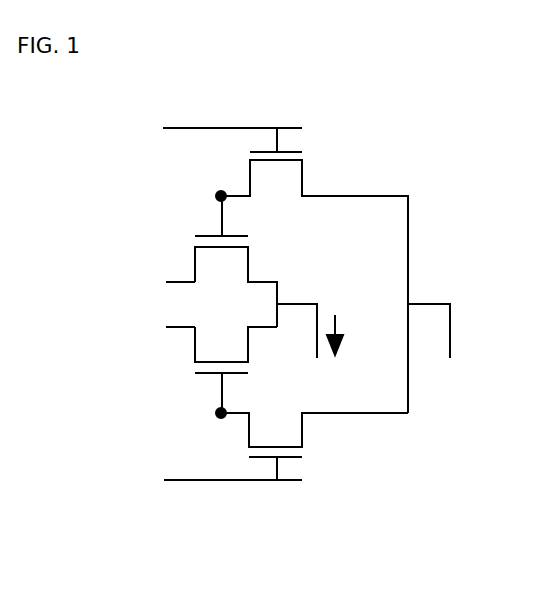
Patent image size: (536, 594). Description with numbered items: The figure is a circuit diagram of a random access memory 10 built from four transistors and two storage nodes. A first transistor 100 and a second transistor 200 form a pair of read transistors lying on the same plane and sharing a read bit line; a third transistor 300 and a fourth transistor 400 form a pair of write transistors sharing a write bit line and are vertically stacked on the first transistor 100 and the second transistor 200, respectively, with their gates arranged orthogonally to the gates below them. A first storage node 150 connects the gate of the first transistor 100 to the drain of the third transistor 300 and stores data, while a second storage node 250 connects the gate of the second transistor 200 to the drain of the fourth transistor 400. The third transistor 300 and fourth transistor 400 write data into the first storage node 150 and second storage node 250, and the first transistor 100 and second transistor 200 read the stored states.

The random access memory 10 is at (251, 337).
The first transistor 100 is at (195, 263).
The first storage node 150 is at (213, 188).
The second transistor 200 is at (194, 345).
The second storage node 250 is at (214, 413).
The third transistor 300 is at (306, 177).
The fourth transistor 400 is at (306, 432).